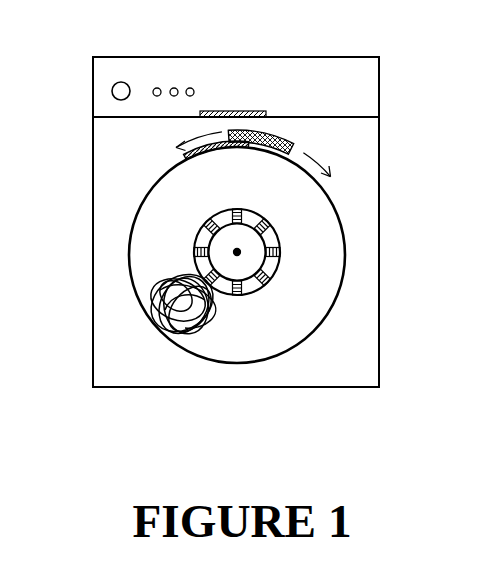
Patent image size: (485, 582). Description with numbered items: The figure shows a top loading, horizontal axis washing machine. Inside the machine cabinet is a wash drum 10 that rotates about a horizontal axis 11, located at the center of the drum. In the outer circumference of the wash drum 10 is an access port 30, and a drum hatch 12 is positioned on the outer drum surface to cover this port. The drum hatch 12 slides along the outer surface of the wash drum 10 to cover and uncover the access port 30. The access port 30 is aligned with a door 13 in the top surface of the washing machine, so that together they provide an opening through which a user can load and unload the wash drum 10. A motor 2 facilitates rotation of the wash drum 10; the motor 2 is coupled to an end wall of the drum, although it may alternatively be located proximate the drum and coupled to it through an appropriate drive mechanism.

The wash drum 10 is at (260, 345).
The horizontal axis 11 is at (240, 252).
The drum hatch 12 is at (292, 142).
The door 13 is at (258, 111).
The access port 30 is at (183, 156).
The motor 2 is at (196, 243).